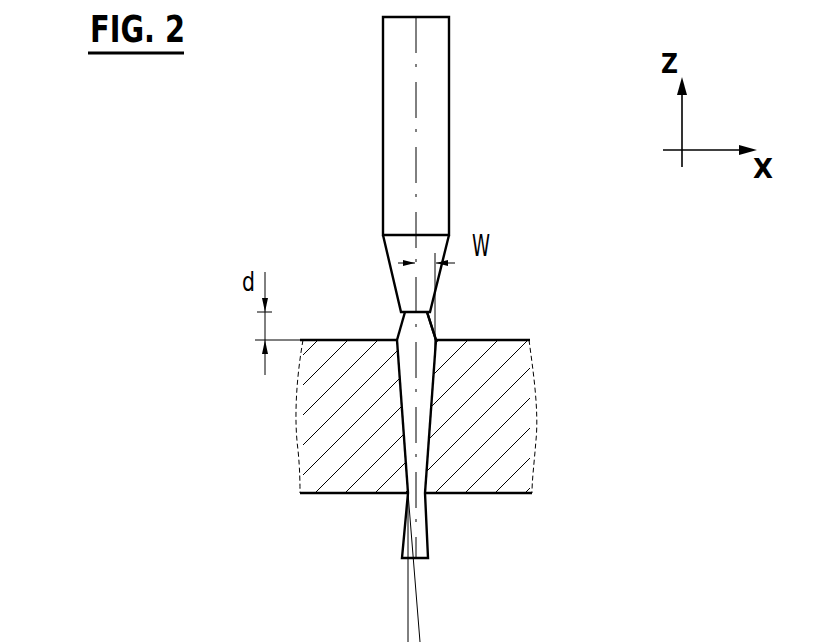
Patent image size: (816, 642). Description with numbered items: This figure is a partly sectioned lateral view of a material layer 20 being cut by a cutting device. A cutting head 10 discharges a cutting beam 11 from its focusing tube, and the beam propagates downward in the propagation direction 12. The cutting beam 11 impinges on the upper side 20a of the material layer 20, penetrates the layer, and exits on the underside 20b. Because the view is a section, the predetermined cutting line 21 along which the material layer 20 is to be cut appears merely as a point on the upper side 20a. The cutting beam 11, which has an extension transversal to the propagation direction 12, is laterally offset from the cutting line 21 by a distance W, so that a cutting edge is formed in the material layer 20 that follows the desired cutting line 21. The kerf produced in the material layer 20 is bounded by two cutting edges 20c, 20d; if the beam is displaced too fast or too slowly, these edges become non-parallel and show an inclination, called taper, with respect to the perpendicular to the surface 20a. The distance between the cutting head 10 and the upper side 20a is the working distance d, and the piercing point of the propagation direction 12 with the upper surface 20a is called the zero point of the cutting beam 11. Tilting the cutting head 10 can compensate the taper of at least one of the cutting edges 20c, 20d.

The cutting head 10 is at (438, 115).
The cutting beam 11 is at (405, 330).
The propagation direction 12 is at (415, 535).
The material layer 20 is at (612, 387).
The upper side 20a is at (507, 340).
The underside 20b is at (502, 493).
The cutting edge 20c is at (402, 418).
The cutting edge 20d is at (430, 418).
The cutting line 21 is at (437, 338).